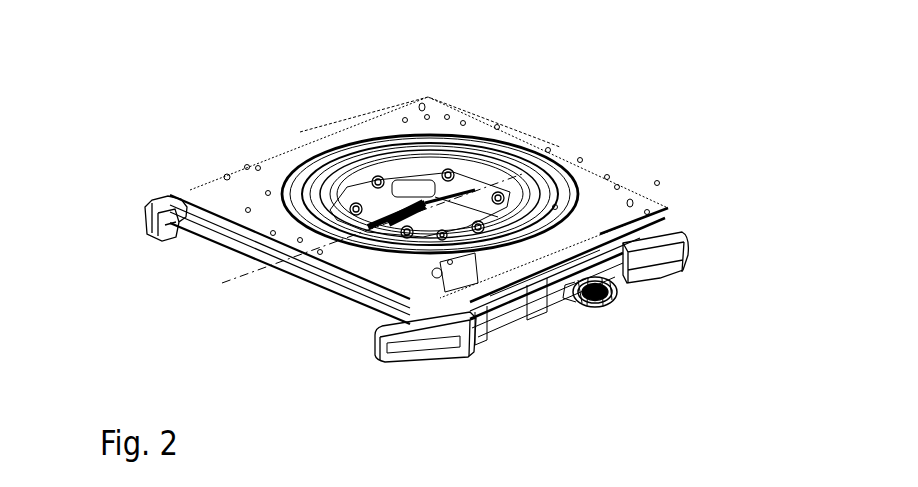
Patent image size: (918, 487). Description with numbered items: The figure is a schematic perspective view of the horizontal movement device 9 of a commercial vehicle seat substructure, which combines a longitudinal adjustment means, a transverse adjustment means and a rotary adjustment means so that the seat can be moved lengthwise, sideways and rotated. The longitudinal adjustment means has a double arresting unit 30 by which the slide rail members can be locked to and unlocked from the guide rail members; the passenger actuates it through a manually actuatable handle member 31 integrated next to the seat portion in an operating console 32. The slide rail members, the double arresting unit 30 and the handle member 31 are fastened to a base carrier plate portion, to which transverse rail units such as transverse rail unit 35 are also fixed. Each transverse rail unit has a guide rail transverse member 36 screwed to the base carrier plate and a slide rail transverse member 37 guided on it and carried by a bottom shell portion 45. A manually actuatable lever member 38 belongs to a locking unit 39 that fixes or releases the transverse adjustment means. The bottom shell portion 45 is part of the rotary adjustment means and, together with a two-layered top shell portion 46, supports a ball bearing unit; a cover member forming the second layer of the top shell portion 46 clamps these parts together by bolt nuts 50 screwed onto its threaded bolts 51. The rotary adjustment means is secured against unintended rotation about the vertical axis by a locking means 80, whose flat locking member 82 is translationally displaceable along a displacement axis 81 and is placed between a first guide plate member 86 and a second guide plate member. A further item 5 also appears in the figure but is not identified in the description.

The first displacement direction 5 is at (247, 306).
The horizontal movement device 9 is at (195, 347).
The double arresting unit 30 is at (130, 203).
The manually actuatable handle member 31 is at (418, 353).
The operating console 32 is at (735, 245).
The transverse rail unit 35 is at (675, 207).
The guide rail transverse member 36 is at (665, 232).
The slide rail transverse member 37 is at (670, 208).
The manually actuatable lever member 38 is at (612, 298).
The locking unit 39 is at (596, 325).
The bottom shell portion 45 is at (507, 280).
The top shell portion 46 is at (438, 116).
The bolt nuts 50 is at (372, 178).
The threaded bolts 51 is at (376, 180).
The locking means 80 is at (391, 237).
The displacement axis 81 is at (222, 283).
The locking member 82 is at (387, 222).
The first guide plate member 86 is at (546, 143).